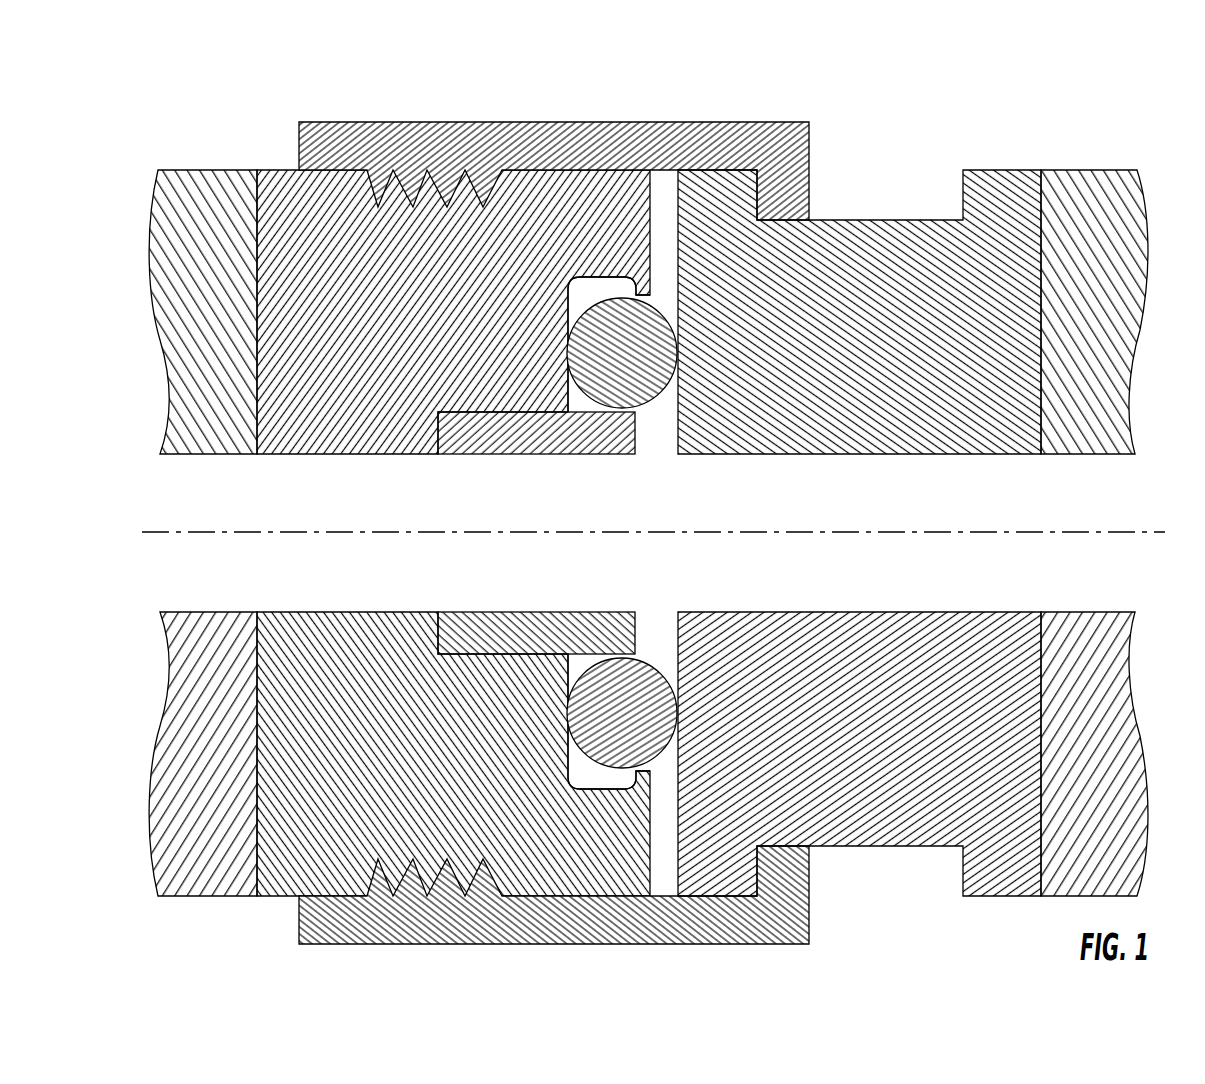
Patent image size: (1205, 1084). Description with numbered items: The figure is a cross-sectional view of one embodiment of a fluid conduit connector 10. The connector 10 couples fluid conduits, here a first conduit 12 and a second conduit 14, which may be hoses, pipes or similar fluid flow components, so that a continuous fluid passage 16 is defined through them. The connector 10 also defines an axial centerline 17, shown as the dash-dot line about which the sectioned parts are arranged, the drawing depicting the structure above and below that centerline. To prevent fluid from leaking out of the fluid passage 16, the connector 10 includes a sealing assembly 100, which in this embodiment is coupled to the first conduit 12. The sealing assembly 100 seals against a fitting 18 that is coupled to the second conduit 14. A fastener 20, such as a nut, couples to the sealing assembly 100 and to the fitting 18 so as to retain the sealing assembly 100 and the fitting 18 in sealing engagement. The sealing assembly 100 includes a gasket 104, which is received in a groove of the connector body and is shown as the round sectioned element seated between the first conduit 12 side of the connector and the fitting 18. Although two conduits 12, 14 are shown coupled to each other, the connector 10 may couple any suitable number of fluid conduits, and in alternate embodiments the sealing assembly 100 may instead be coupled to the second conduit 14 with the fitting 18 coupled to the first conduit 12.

The fluid conduit connector 10 is at (621, 492).
The first conduit 12 is at (212, 170).
The second conduit 14 is at (1055, 170).
The fluid passage 16 is at (579, 508).
The axial centerline 17 is at (195, 532).
The fitting 18 is at (843, 455).
The fastener 20 is at (393, 122).
The sealing assembly 100 is at (417, 455).
The gasket 104 is at (666, 398).